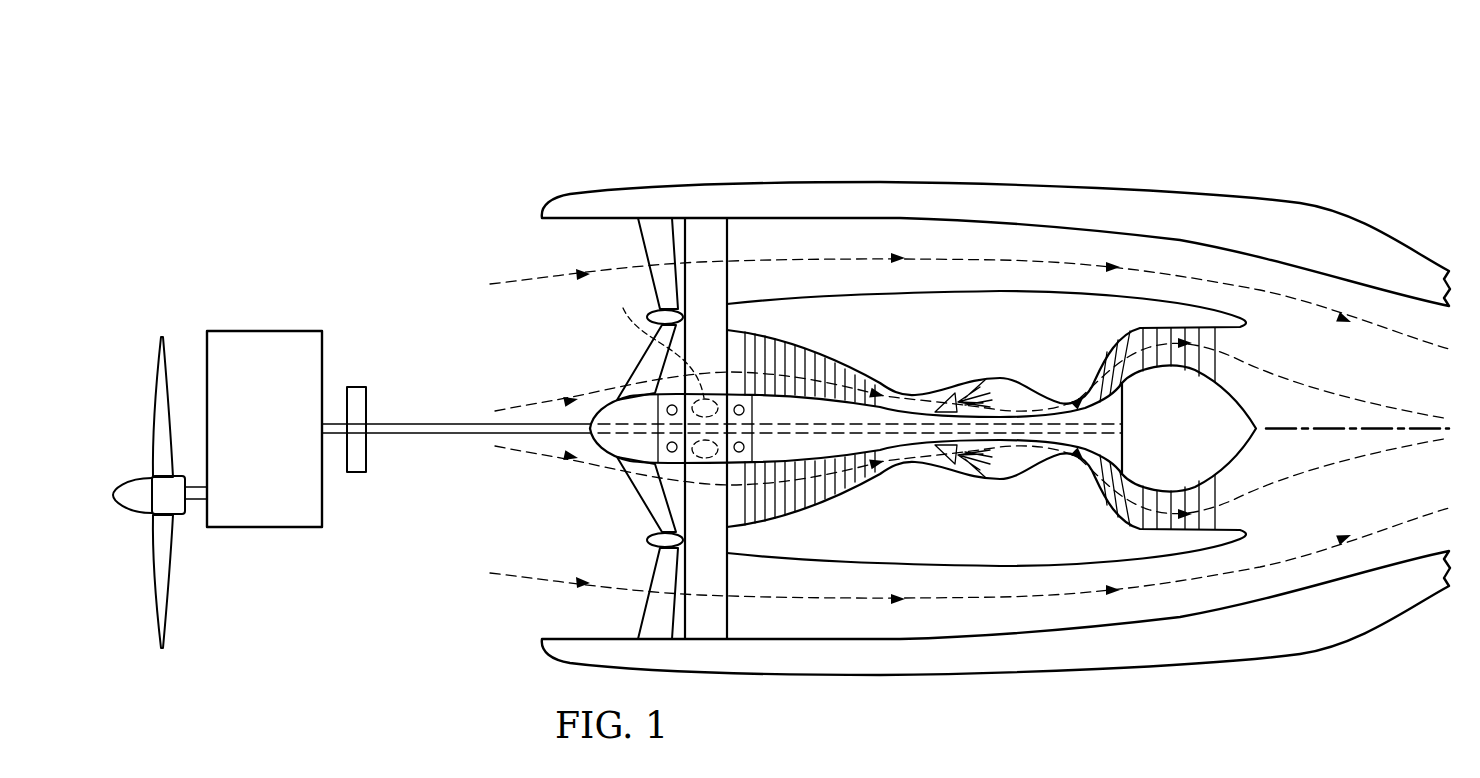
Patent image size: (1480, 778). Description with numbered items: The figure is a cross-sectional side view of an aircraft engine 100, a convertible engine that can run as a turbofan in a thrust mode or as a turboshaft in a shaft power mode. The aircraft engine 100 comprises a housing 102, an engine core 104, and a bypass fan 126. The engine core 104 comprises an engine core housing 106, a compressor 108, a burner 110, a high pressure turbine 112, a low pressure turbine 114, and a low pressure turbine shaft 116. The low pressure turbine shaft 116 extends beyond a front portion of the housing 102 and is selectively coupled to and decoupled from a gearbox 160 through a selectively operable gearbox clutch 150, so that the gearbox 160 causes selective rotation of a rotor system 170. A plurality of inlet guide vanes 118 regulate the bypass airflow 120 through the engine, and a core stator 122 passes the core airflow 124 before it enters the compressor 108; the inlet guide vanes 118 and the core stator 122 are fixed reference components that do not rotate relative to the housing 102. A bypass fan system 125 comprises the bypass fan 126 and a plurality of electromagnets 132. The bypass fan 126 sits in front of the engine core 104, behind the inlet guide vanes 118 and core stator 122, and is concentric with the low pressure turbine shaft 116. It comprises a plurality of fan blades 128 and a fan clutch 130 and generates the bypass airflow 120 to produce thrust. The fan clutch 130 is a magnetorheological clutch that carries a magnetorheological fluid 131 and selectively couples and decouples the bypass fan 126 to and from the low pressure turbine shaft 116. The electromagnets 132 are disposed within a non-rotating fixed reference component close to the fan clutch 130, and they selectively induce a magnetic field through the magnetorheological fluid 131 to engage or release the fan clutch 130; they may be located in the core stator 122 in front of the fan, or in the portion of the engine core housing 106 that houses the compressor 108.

The aircraft engine 100 is at (1152, 100).
The housing 102 is at (855, 181).
The engine core 104 is at (1007, 284).
The engine core housing 106 is at (848, 566).
The compressor 108 is at (813, 487).
The burner 110 is at (943, 456).
The high pressure turbine 112 is at (1117, 516).
The low pressure turbine 114 is at (1217, 524).
The low pressure turbine shaft 116 is at (459, 436).
The inlet guide vanes 118 is at (638, 226).
The bypass airflow 120 is at (522, 280).
The core stator 122 is at (638, 375).
The core airflow 124 is at (525, 407).
The bypass fan system 125 is at (755, 290).
The bypass fan 126 is at (740, 234).
The fan blades 128 is at (729, 278).
The fan clutch 130 is at (707, 464).
The magnetorheological fluid 131 is at (654, 339).
The electromagnets 132 is at (667, 408).
The gearbox clutch 150 is at (367, 402).
The gearbox 160 is at (265, 330).
The rotor system 170 is at (152, 416).